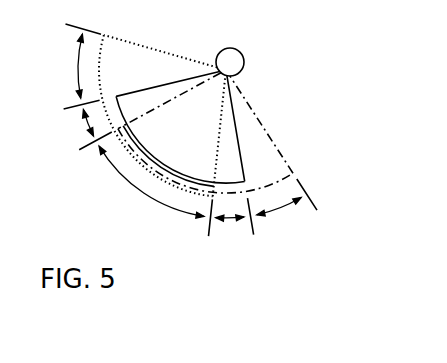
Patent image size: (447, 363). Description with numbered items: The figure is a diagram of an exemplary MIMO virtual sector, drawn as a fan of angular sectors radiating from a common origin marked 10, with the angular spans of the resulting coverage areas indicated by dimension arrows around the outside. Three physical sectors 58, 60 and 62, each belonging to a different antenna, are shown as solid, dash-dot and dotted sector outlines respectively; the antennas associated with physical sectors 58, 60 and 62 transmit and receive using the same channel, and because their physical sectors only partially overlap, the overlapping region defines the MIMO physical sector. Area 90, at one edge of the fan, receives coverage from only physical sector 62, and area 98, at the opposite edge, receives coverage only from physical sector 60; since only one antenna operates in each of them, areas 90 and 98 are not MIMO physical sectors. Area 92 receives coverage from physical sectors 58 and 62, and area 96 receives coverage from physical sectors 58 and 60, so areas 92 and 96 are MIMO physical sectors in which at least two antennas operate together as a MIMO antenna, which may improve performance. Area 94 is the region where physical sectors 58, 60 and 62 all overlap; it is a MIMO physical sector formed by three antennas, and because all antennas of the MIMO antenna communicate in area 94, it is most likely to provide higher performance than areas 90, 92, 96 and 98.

The vehicle 10 is at (223, 70).
The physical sector 58 is at (233, 112).
The physical sector 60 is at (279, 147).
The physical sector 62 is at (138, 47).
The area 90 is at (62, 63).
The area 92 is at (75, 128).
The area 94 is at (133, 198).
The area 96 is at (232, 228).
The area 98 is at (285, 217).